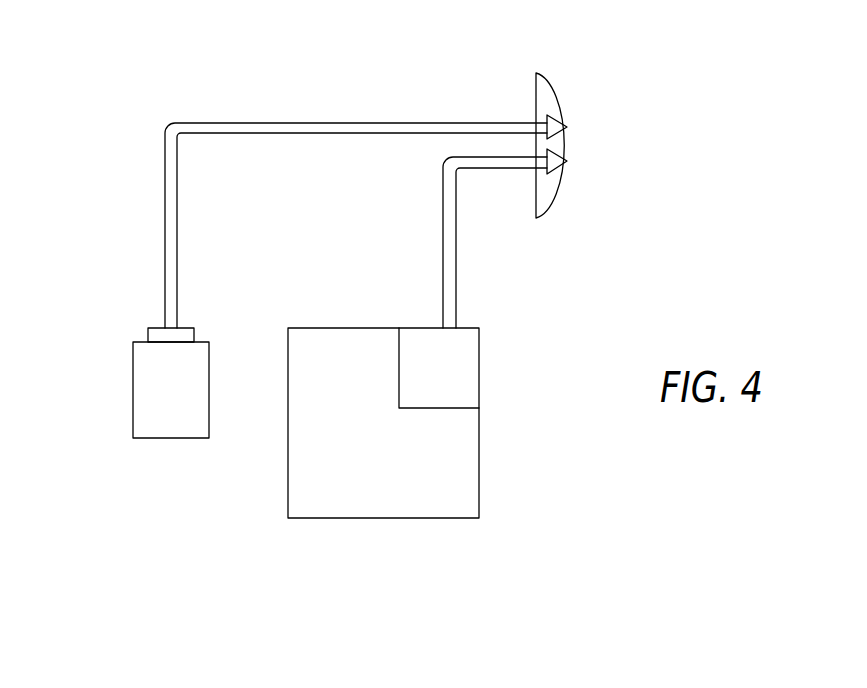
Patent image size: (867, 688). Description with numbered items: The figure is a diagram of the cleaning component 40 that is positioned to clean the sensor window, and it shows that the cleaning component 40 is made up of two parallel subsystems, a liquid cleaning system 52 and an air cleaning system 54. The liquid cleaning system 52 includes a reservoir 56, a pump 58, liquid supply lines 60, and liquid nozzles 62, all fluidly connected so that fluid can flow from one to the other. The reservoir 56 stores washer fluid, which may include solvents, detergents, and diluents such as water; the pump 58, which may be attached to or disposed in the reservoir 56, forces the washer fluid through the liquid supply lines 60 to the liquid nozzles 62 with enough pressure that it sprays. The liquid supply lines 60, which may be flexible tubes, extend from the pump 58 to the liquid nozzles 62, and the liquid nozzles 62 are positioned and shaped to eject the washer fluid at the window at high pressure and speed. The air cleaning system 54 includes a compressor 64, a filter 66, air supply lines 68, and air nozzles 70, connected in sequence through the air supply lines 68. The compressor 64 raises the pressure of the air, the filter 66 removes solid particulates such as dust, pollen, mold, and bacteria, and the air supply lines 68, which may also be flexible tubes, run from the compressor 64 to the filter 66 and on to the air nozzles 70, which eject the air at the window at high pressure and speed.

The cleaning component 40 is at (222, 62).
The liquid cleaning system 52 is at (325, 530).
The air cleaning system 54 is at (157, 465).
The reservoir 56 is at (479, 453).
The pump 58 is at (425, 410).
The liquid supply lines 60 is at (456, 258).
The liquid nozzles 62 is at (563, 185).
The compressor 64 is at (133, 405).
The filter 66 is at (150, 325).
The air supply lines 68 is at (165, 172).
The air nozzles 70 is at (563, 103).